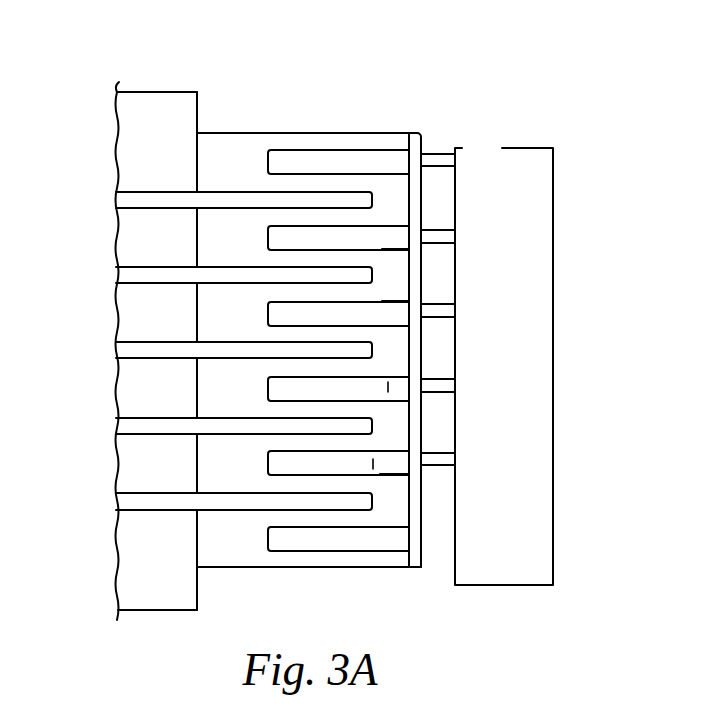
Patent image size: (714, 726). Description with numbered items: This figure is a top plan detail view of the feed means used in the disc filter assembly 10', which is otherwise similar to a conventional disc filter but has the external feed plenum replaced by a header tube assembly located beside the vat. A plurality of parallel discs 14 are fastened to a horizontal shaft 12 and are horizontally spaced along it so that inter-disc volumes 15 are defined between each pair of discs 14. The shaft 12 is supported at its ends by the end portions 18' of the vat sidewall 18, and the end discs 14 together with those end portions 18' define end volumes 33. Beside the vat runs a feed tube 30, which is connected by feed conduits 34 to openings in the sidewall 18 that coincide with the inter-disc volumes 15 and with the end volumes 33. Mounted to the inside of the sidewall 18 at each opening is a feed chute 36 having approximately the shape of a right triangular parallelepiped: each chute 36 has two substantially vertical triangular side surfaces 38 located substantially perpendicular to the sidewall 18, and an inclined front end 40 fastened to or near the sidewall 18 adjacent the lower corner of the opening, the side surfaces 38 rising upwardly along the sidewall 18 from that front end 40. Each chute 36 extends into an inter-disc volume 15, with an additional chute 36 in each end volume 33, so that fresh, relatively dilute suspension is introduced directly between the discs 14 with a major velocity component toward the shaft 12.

The disc filter assembly 10' is at (64, 100).
The shaft 12 is at (163, 110).
The discs 14 is at (217, 200).
The inter-disc volumes 15 is at (239, 323).
The sidewall 18 is at (456, 352).
The end portions 18' is at (309, 347).
The feed tube 30 is at (522, 390).
The end volumes 33 is at (203, 168).
The feed conduits 34 is at (445, 236).
The feed chute 36 is at (412, 165).
The side surfaces 38 is at (382, 302).
The front end 40 is at (373, 464).